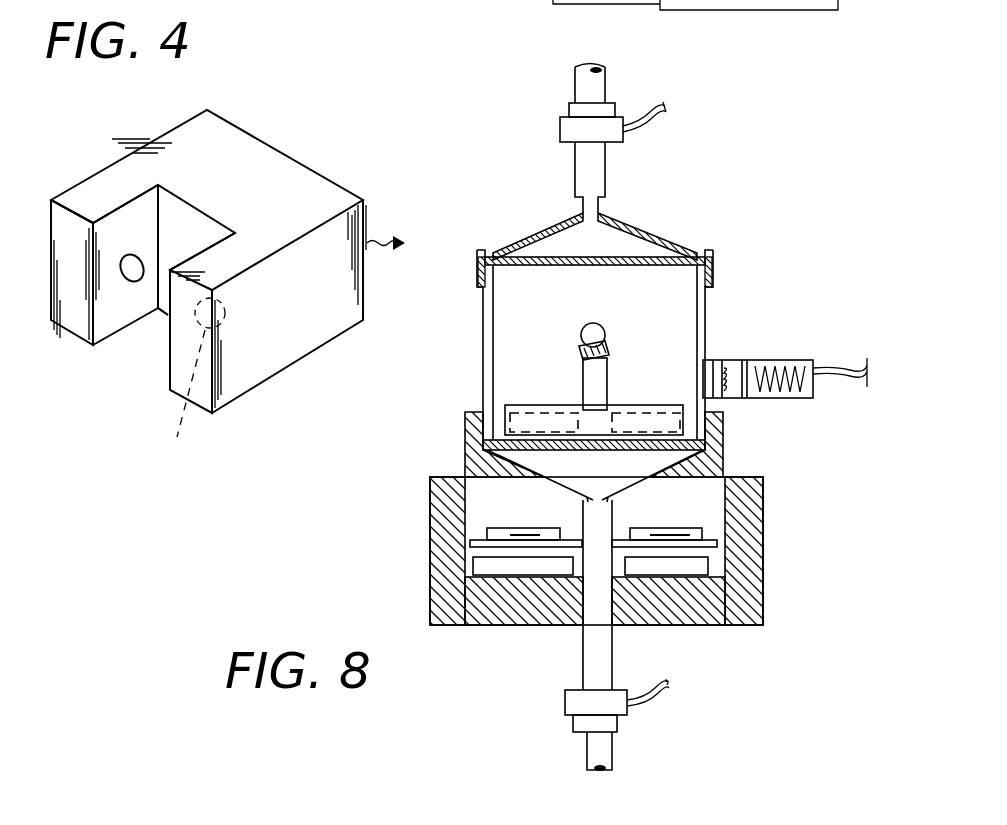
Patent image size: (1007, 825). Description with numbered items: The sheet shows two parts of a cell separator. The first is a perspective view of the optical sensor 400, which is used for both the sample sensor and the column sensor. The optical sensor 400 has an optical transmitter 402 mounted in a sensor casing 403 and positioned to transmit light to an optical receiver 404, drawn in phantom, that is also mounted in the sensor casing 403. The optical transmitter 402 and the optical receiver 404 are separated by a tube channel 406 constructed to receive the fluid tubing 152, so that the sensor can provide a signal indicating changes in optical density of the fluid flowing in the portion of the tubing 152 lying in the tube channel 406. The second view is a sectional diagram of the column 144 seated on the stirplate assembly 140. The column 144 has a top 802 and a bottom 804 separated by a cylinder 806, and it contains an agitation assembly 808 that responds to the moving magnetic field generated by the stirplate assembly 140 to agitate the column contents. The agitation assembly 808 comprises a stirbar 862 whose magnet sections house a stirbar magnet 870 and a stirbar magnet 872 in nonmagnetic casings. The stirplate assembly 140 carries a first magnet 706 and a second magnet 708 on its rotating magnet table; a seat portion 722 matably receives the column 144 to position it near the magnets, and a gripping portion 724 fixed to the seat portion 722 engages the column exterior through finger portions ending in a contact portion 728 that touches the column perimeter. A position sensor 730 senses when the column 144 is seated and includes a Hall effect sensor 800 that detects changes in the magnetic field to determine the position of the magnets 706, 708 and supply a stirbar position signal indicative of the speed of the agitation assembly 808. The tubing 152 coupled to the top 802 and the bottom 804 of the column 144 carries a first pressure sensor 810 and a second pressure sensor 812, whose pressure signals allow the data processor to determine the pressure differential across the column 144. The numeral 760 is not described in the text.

In FIG. 4, the optical sensor 400 is at (315, 143).
In FIG. 4, the optical transmitter 402 is at (130, 282).
In FIG. 4, the sensor casing 403 is at (72, 187).
In FIG. 4, the optical receiver 404 is at (195, 383).
In FIG. 4, the tube channel 406 is at (135, 358).
In FIG. 8, the stirplate assembly 140 is at (800, 557).
In FIG. 8, the column 144 is at (703, 188).
In FIG. 8, the tubing 152 is at (598, 80).
In FIG. 8, the first magnet 706 is at (518, 528).
In FIG. 8, the second magnet 708 is at (650, 528).
In FIG. 8, the seat portion 722 is at (700, 483).
In FIG. 8, the gripping portion 724 is at (718, 413).
In FIG. 8, the contact portion 728 is at (490, 410).
In FIG. 8, the position sensor 730 is at (802, 412).
In FIG. 8, the lower cone 760 is at (465, 445).
In FIG. 8, the Hall effect sensor 800 is at (727, 360).
In FIG. 8, the top 802 is at (513, 243).
In FIG. 8, the bottom 804 is at (463, 487).
In FIG. 8, the cylinder 806 is at (483, 329).
In FIG. 8, the agitation assembly 808 is at (553, 323).
In FIG. 8, the first pressure sensor 810 is at (560, 128).
In FIG. 8, the second pressure sensor 812 is at (565, 713).
In FIG. 8, the stirbar 862 is at (608, 365).
In FIG. 8, the stirbar magnet 870 is at (522, 398).
In FIG. 8, the stirbar magnet 872 is at (647, 407).